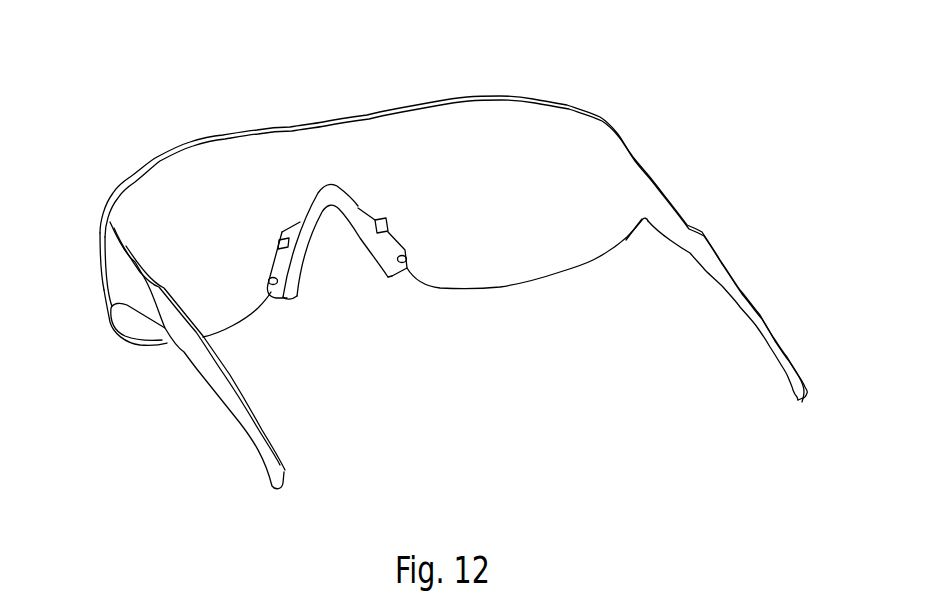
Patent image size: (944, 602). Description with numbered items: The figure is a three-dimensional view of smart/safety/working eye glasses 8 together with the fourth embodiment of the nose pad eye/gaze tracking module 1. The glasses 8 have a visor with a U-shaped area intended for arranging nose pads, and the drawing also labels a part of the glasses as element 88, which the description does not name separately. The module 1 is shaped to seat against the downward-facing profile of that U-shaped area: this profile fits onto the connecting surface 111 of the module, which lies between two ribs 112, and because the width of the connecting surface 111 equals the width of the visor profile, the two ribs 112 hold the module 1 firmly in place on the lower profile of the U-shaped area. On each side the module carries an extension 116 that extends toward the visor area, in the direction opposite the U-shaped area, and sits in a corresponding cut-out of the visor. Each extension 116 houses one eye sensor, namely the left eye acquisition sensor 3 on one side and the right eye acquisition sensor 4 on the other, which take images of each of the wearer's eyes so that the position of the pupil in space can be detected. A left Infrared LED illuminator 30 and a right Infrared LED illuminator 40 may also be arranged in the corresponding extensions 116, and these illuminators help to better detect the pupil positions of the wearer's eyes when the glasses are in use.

The smart/safety/working eye glasses 8 is at (258, 111).
The frame rim 88 is at (320, 128).
The nose pad eye/gaze tracking module 1 is at (325, 212).
The ribs 112 is at (340, 200).
The connecting surface 111 is at (358, 213).
The right eye acquisition sensor 4 is at (280, 244).
The extension 116 is at (276, 264).
The right Infrared LED illuminator 40 is at (255, 281).
The left eye acquisition sensor 3 is at (383, 228).
The left Infrared LED illuminator 30 is at (406, 258).